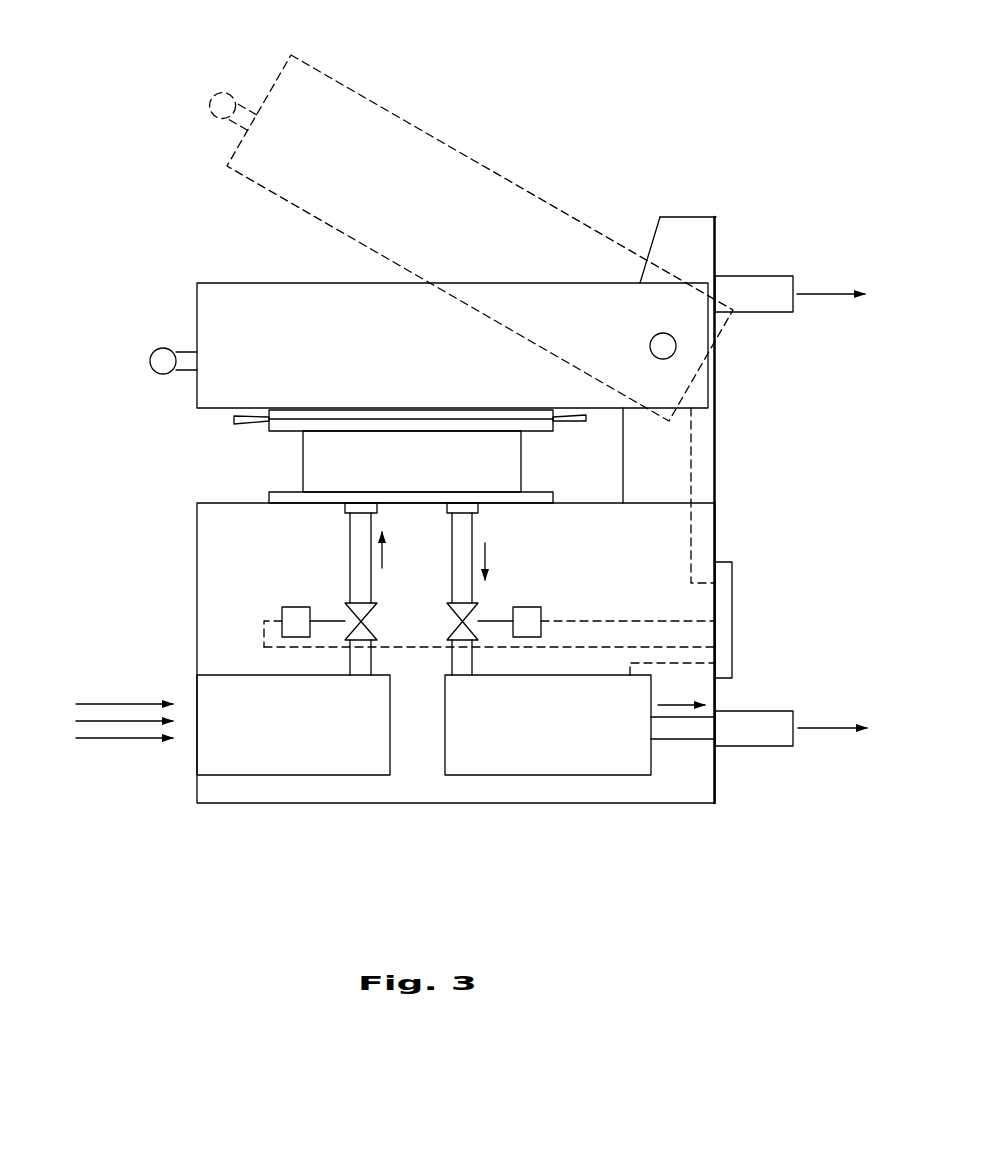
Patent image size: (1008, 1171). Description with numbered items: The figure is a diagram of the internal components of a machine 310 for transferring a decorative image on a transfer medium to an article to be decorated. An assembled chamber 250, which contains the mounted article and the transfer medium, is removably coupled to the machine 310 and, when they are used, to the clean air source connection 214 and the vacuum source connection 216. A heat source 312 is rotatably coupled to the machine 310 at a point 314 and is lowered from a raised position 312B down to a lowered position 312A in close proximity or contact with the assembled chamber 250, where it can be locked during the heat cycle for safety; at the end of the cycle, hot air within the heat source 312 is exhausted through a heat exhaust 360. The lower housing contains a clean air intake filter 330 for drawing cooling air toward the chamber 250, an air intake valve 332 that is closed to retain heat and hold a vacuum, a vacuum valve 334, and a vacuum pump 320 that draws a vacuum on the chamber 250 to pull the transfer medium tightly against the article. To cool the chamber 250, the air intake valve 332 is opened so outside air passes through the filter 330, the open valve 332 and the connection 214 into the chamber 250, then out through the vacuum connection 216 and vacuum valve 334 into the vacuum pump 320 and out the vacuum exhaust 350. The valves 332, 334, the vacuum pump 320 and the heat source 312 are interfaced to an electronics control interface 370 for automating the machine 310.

The machine 310 is at (610, 36).
The heat source 312 is at (150, 350).
The heat source lowered position 312A is at (197, 283).
The heat source raised position 312B is at (240, 146).
The rotation point 314 is at (672, 355).
The heat exhaust 360 is at (755, 312).
The assembled chamber 250 is at (280, 457).
The clean air source connection 214 is at (345, 512).
The vacuum source connection 216 is at (480, 512).
The air intake valve 332 is at (282, 612).
The vacuum valve 334 is at (482, 610).
The electronics control interface 370 is at (732, 607).
The clean air intake filter 330 is at (268, 775).
The vacuum pump 320 is at (572, 775).
The vacuum exhaust 350 is at (755, 746).